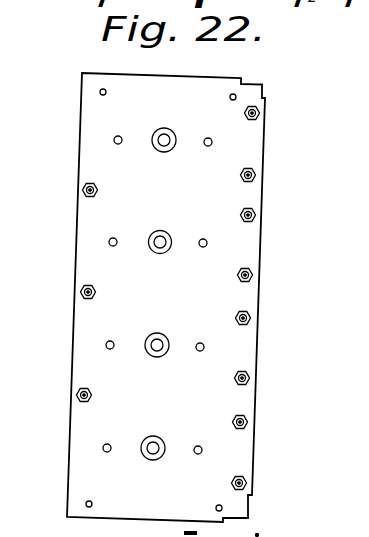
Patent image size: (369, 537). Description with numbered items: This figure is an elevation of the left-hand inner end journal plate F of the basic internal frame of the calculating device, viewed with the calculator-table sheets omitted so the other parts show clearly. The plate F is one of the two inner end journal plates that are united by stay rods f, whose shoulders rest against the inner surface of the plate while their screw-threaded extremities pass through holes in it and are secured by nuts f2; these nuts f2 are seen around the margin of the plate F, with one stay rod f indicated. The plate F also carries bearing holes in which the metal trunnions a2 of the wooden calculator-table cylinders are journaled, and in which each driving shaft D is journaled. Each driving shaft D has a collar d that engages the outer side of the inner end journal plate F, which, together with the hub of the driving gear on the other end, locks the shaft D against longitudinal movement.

The inner end journal plate F is at (166, 297).
The driving shaft D is at (170, 130).
The collar d is at (158, 151).
The trunnion a2 is at (291, 442).
The stay rod f is at (236, 315).
The nut f2 is at (260, 113).